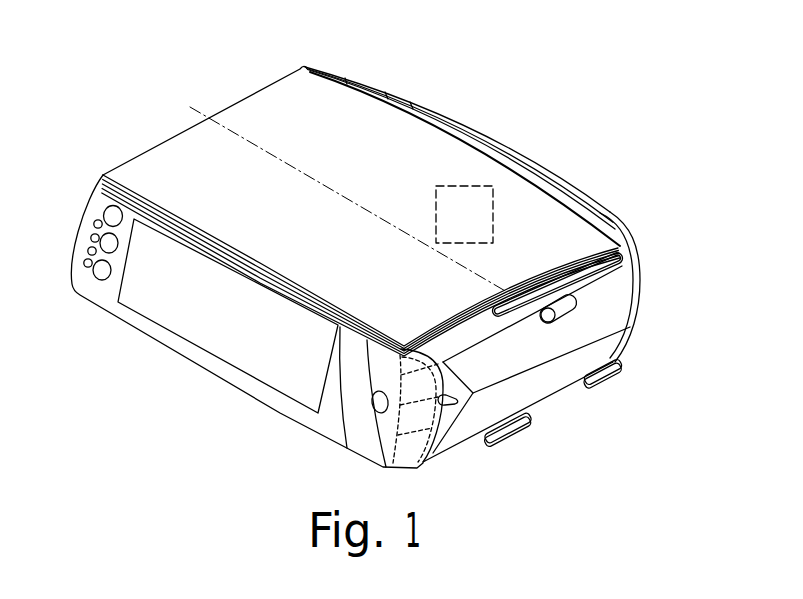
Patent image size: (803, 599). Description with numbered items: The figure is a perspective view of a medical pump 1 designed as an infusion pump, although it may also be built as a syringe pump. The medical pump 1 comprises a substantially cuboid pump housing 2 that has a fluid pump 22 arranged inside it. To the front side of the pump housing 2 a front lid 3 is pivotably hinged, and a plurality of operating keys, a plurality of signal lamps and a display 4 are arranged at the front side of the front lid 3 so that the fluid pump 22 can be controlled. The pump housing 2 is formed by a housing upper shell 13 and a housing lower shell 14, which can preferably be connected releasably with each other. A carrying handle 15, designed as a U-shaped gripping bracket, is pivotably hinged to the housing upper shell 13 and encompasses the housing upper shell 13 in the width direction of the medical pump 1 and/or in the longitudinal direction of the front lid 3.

The medical pump 1 is at (158, 88).
The pump housing 2 is at (710, 186).
The front lid 3 is at (343, 415).
The display 4 is at (198, 331).
The housing upper shell 13 is at (547, 212).
The housing lower shell 14 is at (608, 334).
The carrying handle 15 is at (392, 90).
The fluid pump 22 is at (483, 197).